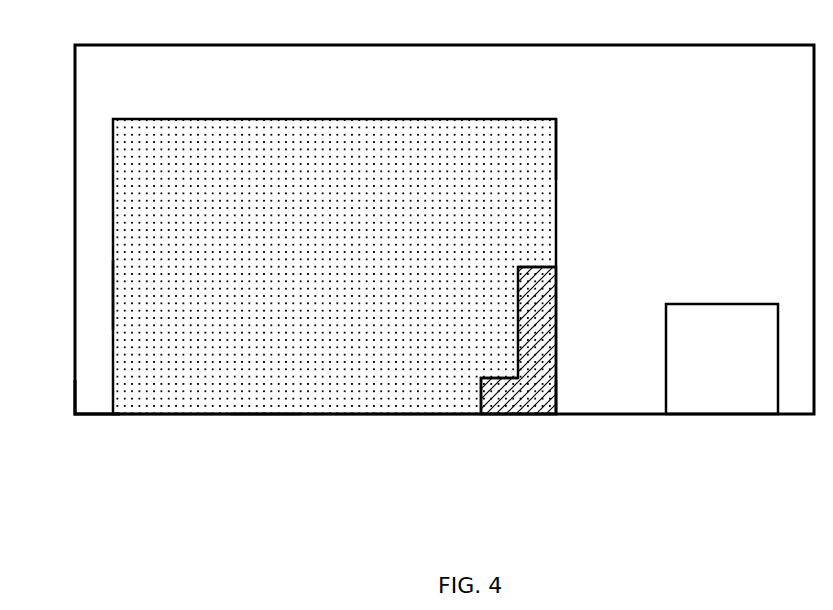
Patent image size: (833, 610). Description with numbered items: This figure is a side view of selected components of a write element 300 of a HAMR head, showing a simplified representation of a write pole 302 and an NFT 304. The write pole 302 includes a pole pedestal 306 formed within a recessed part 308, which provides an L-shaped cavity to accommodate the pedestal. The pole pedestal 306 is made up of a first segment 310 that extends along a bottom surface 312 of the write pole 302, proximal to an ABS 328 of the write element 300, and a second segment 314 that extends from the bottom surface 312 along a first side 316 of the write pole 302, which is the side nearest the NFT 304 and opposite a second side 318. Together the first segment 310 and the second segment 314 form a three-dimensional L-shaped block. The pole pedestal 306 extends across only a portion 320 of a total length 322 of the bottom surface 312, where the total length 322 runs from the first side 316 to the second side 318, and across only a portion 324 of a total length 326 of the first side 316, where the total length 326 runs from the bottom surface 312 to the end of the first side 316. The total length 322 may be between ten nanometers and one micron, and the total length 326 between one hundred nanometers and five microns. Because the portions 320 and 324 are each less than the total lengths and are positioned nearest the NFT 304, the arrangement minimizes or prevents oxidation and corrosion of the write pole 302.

The write element 300 is at (428, 45).
The write pole 302 is at (222, 119).
The NFT 304 is at (710, 304).
The pole pedestal 306 is at (540, 262).
The recessed part 308 is at (560, 417).
The first segment 310 is at (478, 384).
The bottom surface 312 is at (268, 408).
The second segment 314 is at (532, 260).
The first side 316 is at (562, 124).
The second side 318 is at (118, 293).
The portion of the bottom surface 320 is at (552, 433).
The total length of the bottom surface 322 is at (552, 472).
The portion of the first side 324 is at (565, 272).
The total length of the first side 326 is at (611, 124).
The ABS 328 is at (97, 414).